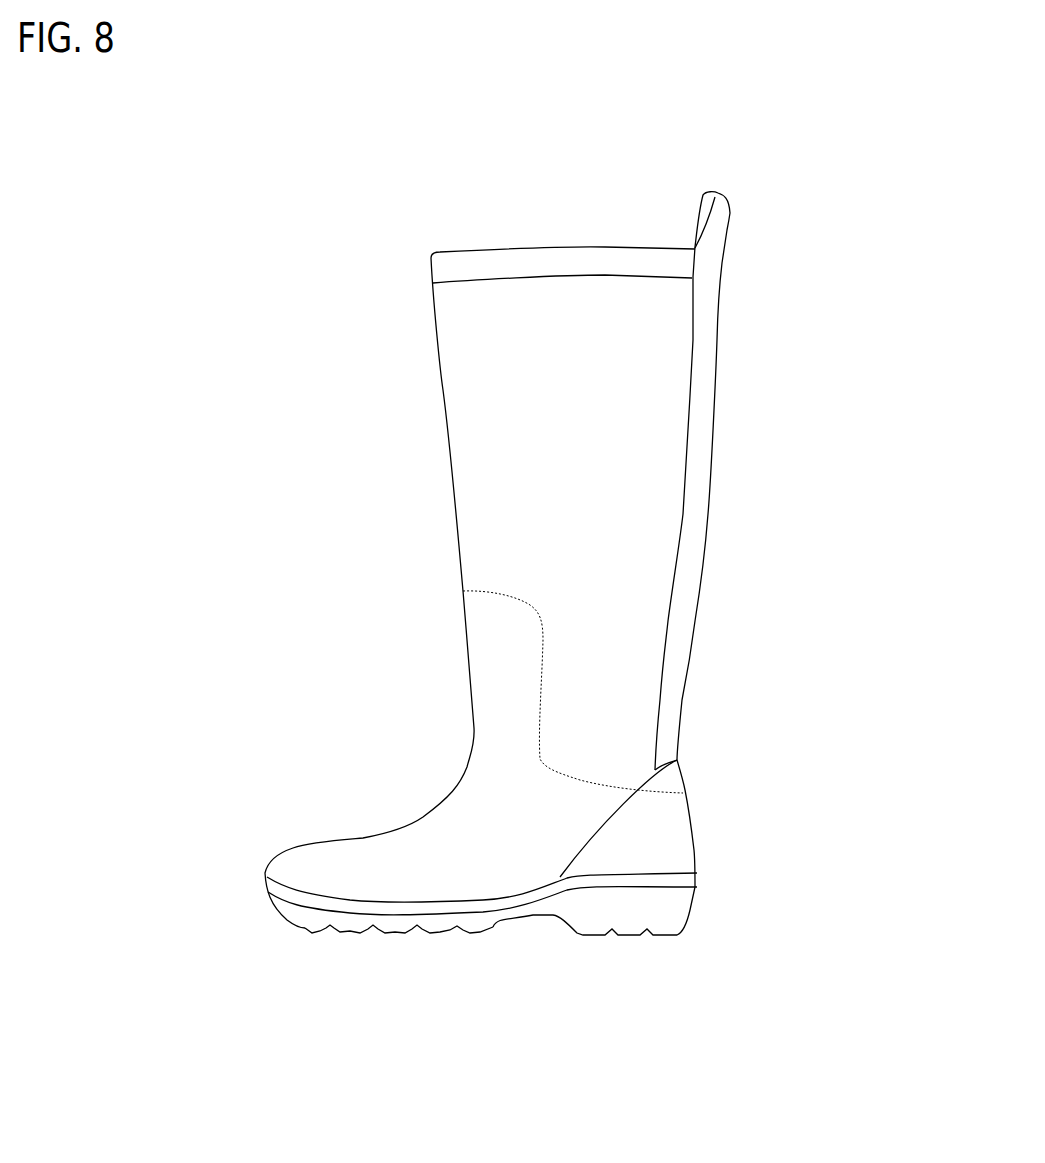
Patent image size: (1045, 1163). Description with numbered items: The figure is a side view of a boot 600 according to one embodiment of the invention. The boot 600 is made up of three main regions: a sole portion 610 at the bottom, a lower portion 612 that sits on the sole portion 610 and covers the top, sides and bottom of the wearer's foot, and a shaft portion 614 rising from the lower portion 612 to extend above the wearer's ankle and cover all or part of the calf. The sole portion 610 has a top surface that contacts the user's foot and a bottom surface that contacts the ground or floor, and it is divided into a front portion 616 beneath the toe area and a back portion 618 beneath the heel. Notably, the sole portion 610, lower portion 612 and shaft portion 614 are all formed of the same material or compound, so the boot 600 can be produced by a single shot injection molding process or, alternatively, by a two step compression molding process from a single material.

The boot 600 is at (359, 413).
The shaft portion 614 is at (638, 547).
The lower portion 612 is at (380, 862).
The sole portion 610 is at (498, 908).
The front portion 616 is at (318, 915).
The back portion 618 is at (620, 910).